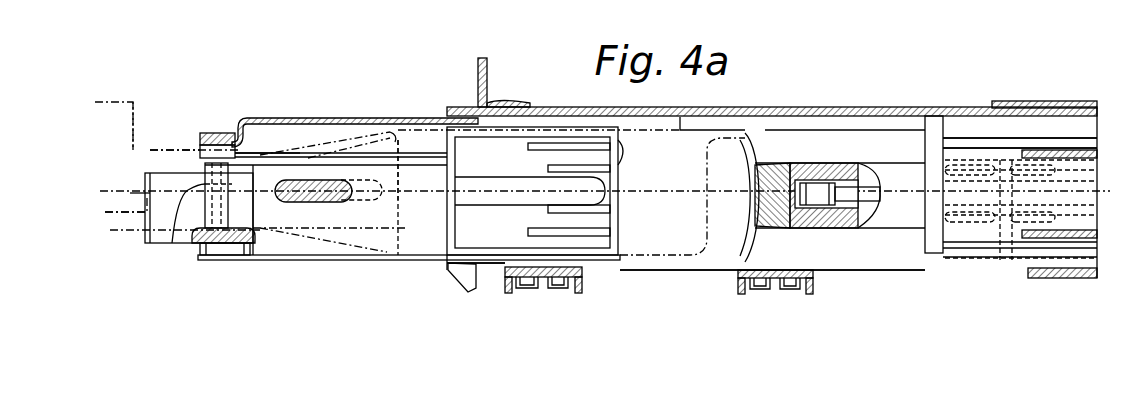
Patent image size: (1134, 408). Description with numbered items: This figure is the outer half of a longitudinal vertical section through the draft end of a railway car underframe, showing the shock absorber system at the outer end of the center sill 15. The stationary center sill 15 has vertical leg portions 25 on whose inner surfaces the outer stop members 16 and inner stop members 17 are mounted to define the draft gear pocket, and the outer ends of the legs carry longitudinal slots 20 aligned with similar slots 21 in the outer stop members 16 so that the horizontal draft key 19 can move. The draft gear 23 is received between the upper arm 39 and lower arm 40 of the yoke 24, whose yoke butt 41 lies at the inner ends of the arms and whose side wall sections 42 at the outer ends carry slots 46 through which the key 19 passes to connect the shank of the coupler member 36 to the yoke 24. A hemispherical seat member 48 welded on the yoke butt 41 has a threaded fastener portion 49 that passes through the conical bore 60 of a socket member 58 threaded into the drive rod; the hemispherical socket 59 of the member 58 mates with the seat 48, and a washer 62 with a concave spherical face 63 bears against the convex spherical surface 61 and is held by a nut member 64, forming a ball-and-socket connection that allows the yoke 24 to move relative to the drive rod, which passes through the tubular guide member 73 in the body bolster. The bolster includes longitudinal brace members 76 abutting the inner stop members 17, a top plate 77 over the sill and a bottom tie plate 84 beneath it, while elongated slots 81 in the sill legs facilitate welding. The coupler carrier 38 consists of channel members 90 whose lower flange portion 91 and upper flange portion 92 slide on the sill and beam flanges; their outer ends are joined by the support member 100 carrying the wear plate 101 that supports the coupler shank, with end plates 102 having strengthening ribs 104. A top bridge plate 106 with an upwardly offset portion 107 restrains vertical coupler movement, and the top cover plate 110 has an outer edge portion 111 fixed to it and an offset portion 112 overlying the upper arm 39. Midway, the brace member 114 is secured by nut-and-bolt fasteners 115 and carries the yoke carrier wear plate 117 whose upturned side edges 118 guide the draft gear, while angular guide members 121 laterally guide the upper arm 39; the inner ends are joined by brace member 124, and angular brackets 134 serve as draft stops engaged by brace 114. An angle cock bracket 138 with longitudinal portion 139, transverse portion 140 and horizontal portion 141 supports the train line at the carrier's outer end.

The center sill 15 is at (900, 110).
The outer stop members 16 is at (618, 145).
The inner stop members 17 is at (955, 132).
The draft key 19 is at (300, 180).
The longitudinal slots 20 is at (498, 178).
The longitudinal slots 21 is at (590, 178).
The draft gear 23 is at (422, 265).
The yoke 24 is at (680, 255).
The vertical leg portions 25 is at (888, 271).
The coupler member 36 is at (140, 148).
The coupler carrier 38 is at (282, 264).
The upper arm 39 is at (437, 122).
The lower arm 40 is at (446, 270).
The yoke butt 41 is at (707, 168).
The side wall sections 42 is at (283, 150).
The slots 46 is at (385, 195).
The hemispherical seat member 48 is at (760, 165).
The externally threaded fastener portion 49 is at (830, 163).
The socket member 58 is at (805, 163).
The hemispherical socket 59 is at (790, 165).
The conically shaped bore 60 is at (795, 228).
The convex spherical surface 61 is at (820, 228).
The washer 62 is at (848, 175).
The concave spherical face 63 is at (860, 205).
The nut member 64 is at (860, 163).
The tubular guide member 73 is at (1098, 142).
The longitudinal brace members 76 is at (990, 110).
The top plate 77 is at (1066, 101).
The elongated slots 81 is at (1015, 150).
The bottom tie plate 84 is at (1062, 279).
The channel members 90 is at (312, 264).
The inwardly directed flange portion 91 is at (258, 262).
The inwardly turned flange portion 92 is at (400, 160).
The coupler carrier support member 100 is at (226, 258).
The wear plate 101 is at (206, 246).
The end plates 102 is at (166, 238).
The strengthening ribs 104 is at (240, 194).
The top bridge plate 106 is at (202, 156).
The upwardly offset portion 107 is at (200, 135).
The top cover plate 110 is at (325, 118).
The outer edge portion 111 is at (240, 130).
The upwardly offset portion 112 is at (360, 120).
The brace member 114 is at (538, 283).
The nut-and-bolt fasteners 115 is at (566, 292).
The yoke carrier wear plate member 117 is at (510, 282).
The upturned side edges 118 is at (505, 272).
The angular guide members 121 is at (935, 125).
The brace member 124 is at (813, 282).
The angular brackets 134 is at (470, 294).
The angle cock bracket 138 is at (155, 172).
The vertically disposed longitudinally extending portion 139 is at (185, 245).
The transverse vertically disposed portion 140 is at (146, 192).
The horizontally disposed portion 141 is at (112, 230).